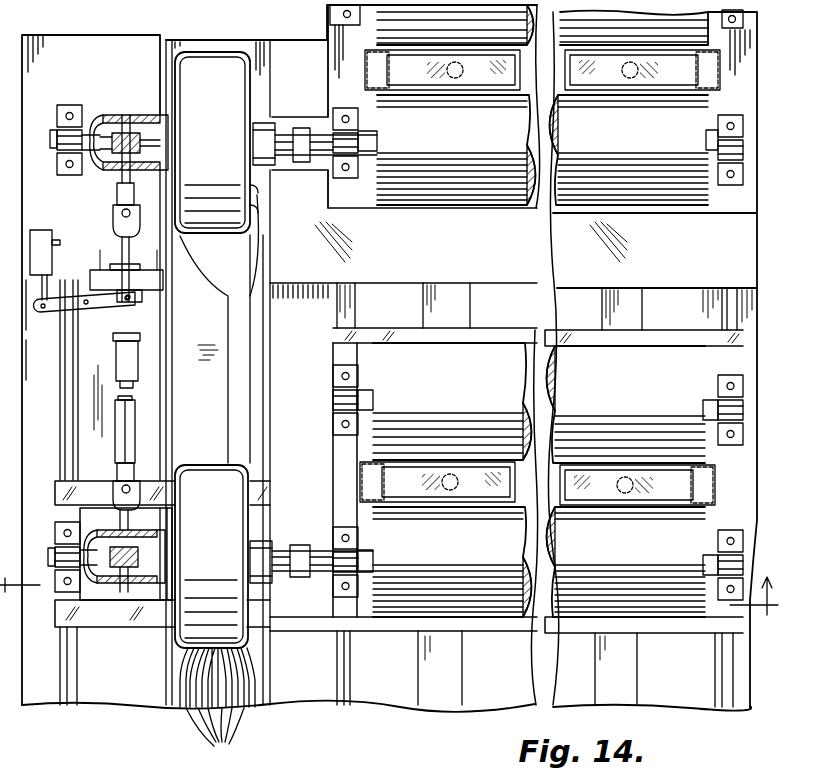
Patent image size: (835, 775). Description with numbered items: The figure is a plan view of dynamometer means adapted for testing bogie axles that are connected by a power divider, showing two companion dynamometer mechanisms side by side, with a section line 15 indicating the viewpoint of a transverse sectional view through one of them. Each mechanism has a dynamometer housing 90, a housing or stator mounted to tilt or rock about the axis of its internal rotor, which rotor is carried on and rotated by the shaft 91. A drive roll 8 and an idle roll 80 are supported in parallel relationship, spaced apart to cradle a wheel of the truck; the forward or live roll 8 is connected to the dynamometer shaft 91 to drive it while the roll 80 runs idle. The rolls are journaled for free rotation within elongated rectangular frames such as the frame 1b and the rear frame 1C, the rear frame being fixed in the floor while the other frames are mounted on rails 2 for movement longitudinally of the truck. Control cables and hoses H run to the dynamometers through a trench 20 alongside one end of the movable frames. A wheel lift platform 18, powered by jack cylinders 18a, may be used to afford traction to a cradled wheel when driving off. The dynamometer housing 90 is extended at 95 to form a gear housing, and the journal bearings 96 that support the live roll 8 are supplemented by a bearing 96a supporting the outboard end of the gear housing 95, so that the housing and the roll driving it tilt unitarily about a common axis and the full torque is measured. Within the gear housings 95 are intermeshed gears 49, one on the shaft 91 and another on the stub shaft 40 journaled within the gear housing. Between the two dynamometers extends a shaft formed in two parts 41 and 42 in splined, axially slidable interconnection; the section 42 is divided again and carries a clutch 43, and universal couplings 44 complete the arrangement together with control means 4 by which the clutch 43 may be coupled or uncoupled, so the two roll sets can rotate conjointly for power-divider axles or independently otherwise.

The dynamometer housing 90 is at (222, 120).
The bearing 96a is at (65, 128).
The gear housing 95 is at (97, 122).
The intermeshed gears 49 is at (146, 120).
The universal couplings 44 is at (117, 210).
The control means 4 is at (40, 232).
The clutch 43 is at (113, 268).
The shaft section 42 is at (120, 322).
The shaft section 41 is at (120, 429).
The stub shaft 40 is at (122, 524).
The rails 2 is at (60, 685).
The idle roll 80 is at (340, 22).
The rear frame 1C is at (330, 62).
The dynamometer shaft 91 is at (318, 135).
The drive roll 8 is at (476, 188).
The wheel lift platform 18 is at (476, 80).
The jack cylinders 18a is at (626, 82).
The trench 20 is at (470, 365).
The journal bearings 96 is at (352, 182).
The frame 1b is at (334, 448).
The section line 15 is at (758, 602).
The hoses H is at (217, 704).